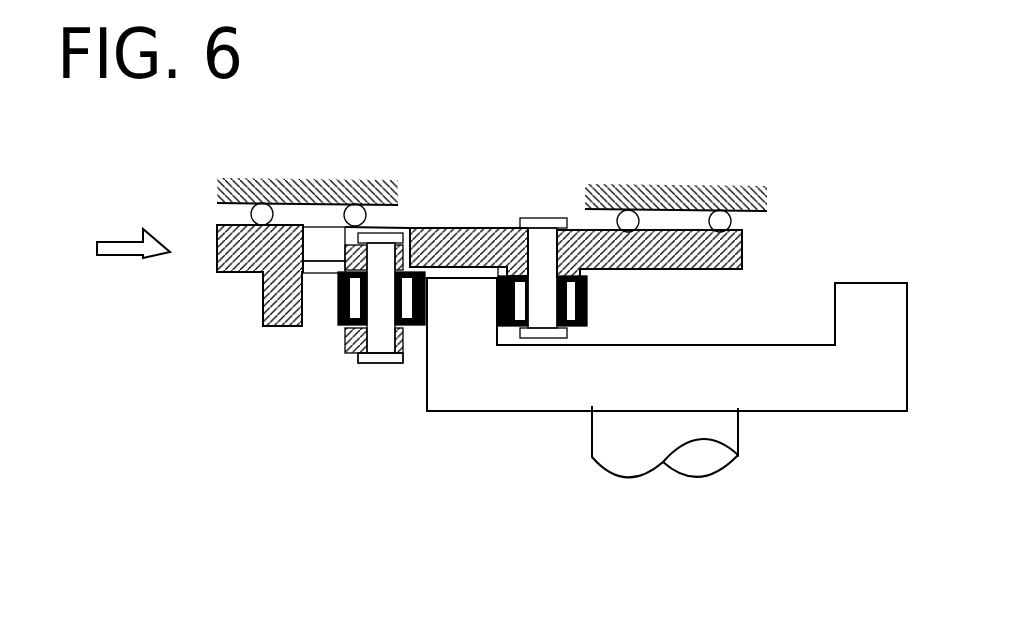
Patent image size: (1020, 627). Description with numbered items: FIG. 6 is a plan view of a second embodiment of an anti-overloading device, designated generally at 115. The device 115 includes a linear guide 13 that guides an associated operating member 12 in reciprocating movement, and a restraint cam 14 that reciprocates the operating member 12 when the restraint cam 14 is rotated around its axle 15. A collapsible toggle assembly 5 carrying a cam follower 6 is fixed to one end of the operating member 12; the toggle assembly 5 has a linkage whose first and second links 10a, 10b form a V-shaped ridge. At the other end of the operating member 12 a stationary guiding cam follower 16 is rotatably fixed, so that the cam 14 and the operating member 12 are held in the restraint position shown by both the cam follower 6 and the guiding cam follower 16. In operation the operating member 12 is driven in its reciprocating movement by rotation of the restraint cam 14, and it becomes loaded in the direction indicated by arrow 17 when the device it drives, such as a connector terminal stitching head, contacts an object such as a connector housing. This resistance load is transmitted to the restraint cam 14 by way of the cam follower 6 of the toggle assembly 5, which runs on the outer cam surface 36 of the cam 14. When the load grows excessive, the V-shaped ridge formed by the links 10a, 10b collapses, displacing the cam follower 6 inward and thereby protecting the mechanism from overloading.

The collapsible toggle assembly 5 is at (318, 360).
The cam follower 6 is at (415, 330).
The first link 10a is at (352, 352).
The second link 10b is at (345, 340).
The operating member 12 is at (235, 273).
The linear guide 13 is at (317, 220).
The restraint cam 14 is at (538, 395).
The axle 15 is at (623, 458).
The stationary guiding cam follower 16 is at (588, 307).
The arrow 17 is at (125, 248).
The outer cam surface 36 is at (427, 390).
The anti-overloading device 115 is at (330, 350).